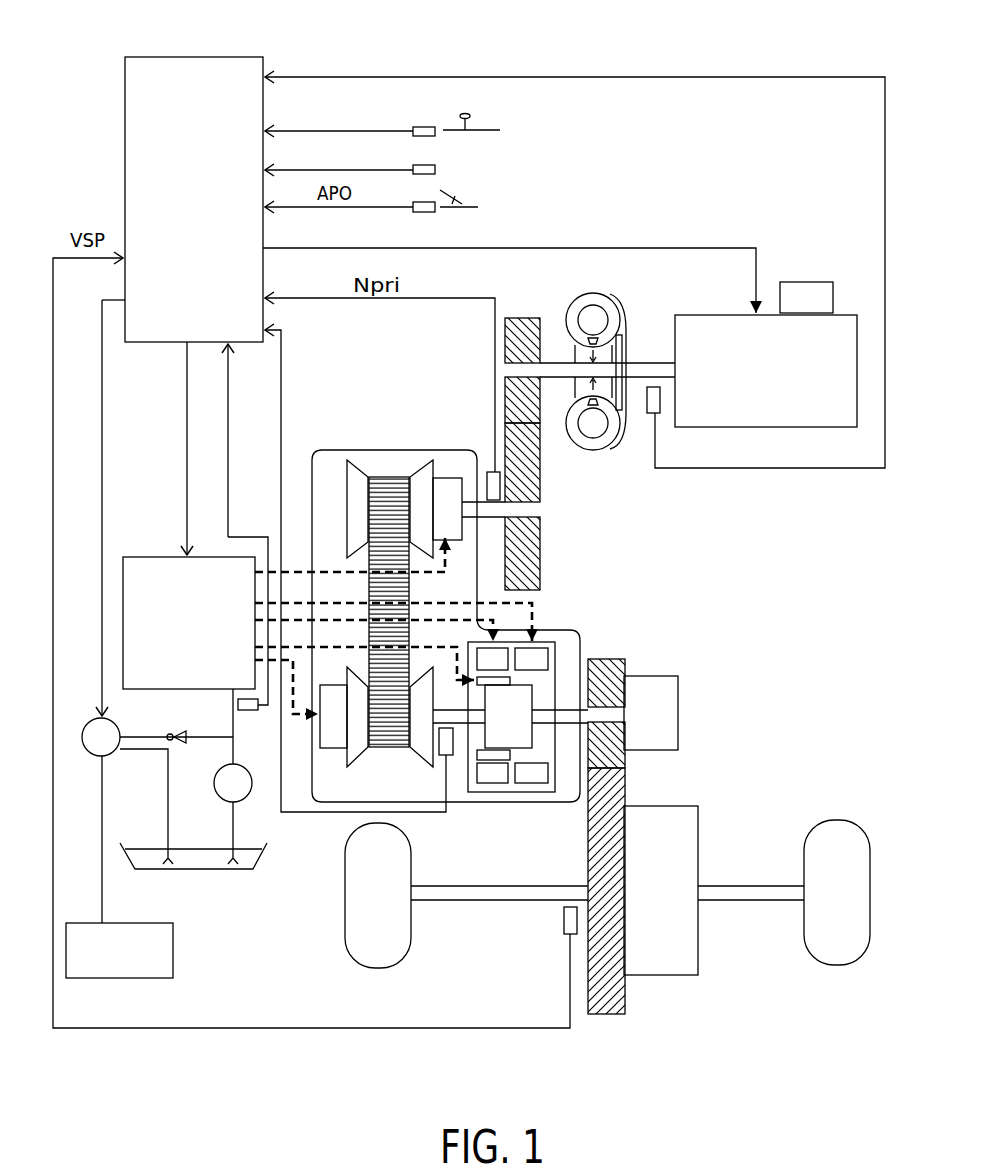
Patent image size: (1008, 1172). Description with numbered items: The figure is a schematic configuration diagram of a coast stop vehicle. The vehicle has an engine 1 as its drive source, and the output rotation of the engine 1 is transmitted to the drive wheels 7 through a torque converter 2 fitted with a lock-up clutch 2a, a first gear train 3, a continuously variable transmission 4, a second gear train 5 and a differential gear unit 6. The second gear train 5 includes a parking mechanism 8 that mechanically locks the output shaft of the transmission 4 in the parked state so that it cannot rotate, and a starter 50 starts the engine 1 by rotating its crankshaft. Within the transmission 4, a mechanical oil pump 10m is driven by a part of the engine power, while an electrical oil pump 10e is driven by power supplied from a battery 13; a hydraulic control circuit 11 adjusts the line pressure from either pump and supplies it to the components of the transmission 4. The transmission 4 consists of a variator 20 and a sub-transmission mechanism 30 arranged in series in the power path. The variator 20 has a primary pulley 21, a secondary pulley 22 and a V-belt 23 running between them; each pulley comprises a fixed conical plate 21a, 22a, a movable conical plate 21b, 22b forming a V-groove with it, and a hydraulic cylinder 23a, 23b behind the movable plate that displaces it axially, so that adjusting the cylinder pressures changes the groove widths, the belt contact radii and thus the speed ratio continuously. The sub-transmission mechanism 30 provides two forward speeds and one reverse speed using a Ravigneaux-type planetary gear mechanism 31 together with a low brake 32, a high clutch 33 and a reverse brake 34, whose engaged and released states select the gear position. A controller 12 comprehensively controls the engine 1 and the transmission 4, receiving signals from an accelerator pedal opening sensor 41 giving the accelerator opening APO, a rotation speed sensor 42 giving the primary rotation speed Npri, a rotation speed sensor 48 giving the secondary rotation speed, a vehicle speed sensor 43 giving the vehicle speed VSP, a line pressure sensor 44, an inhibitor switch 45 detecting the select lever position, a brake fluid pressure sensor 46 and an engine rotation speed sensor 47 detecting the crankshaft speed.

The engine 1 is at (830, 327).
The torque converter 2 is at (616, 359).
The lock-up clutch 2a is at (620, 348).
The first gear train 3 is at (512, 307).
The transmission 4 is at (465, 450).
The second gear train 5 is at (605, 1020).
The differential gear unit 6 is at (657, 953).
The drive wheels 7 is at (378, 953).
The parking mechanism 8 is at (660, 703).
The electrical oil pump 10e is at (103, 757).
The mechanical oil pump 10m is at (232, 797).
The hydraulic control circuit 11 is at (142, 562).
The controller 12 is at (250, 63).
The battery 13 is at (163, 963).
The variator 20 is at (332, 480).
The primary pulley 21 is at (408, 464).
The fixed conical plate 21a is at (355, 473).
The movable conical plate 21b is at (420, 480).
The secondary pulley 22 is at (392, 768).
The fixed conical plate 22a is at (422, 745).
The movable conical plate 22b is at (358, 747).
The V-belt 23 is at (392, 475).
The hydraulic cylinder 23a is at (440, 503).
The hydraulic cylinder 23b is at (328, 738).
The sub-transmission mechanism 30 is at (561, 690).
The Ravigneaux-type planetary gear mechanism 31 is at (512, 712).
The low brake 32 is at (497, 660).
The high clutch 33 is at (497, 755).
The reverse brake 34 is at (530, 660).
The accelerator pedal opening sensor 41 is at (426, 212).
The rotation speed sensor 42 is at (492, 472).
The vehicle speed sensor 43 is at (563, 927).
The line pressure sensor 44 is at (248, 710).
The inhibitor switch 45 is at (430, 127).
The brake fluid pressure sensor 46 is at (418, 174).
The engine rotation speed sensor 47 is at (648, 415).
The rotation speed sensor 48 is at (448, 755).
The starter 50 is at (790, 292).